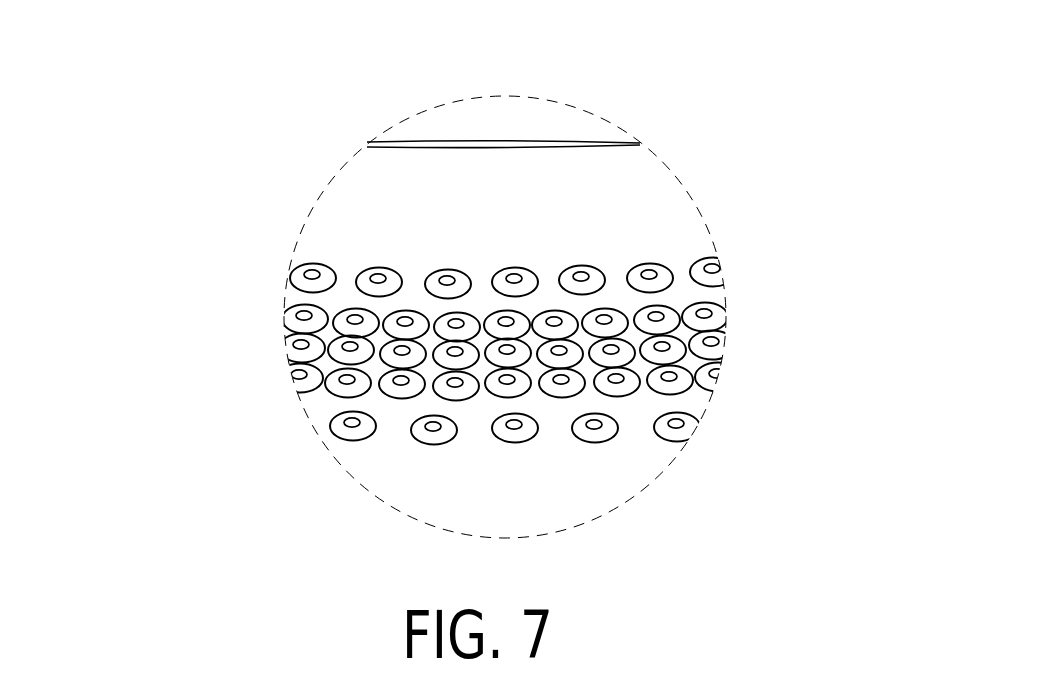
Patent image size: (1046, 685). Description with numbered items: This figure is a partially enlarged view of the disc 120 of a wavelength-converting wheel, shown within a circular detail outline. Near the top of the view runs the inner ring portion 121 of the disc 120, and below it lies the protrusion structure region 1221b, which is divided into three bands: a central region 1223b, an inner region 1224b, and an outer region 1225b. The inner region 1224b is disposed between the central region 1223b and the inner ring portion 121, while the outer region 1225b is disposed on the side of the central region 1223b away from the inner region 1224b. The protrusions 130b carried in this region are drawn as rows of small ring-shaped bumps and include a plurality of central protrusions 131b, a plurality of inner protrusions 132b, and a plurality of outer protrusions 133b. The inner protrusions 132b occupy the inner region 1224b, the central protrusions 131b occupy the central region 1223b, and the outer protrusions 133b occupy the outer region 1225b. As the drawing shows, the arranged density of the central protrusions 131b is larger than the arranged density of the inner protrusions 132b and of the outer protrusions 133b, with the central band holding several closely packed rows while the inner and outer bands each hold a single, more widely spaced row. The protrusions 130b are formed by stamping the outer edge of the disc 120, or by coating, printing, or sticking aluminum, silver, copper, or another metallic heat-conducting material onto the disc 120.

The disc 120 is at (653, 210).
The inner ring portion 121 is at (565, 123).
The protrusion structure region 1221b is at (162, 227).
The central region 1223b is at (327, 340).
The inner region 1224b is at (328, 250).
The outer region 1225b is at (322, 415).
The protrusions 130b is at (863, 243).
The central protrusions 131b is at (717, 308).
The inner protrusions 132b is at (714, 265).
The outer protrusions 133b is at (677, 421).